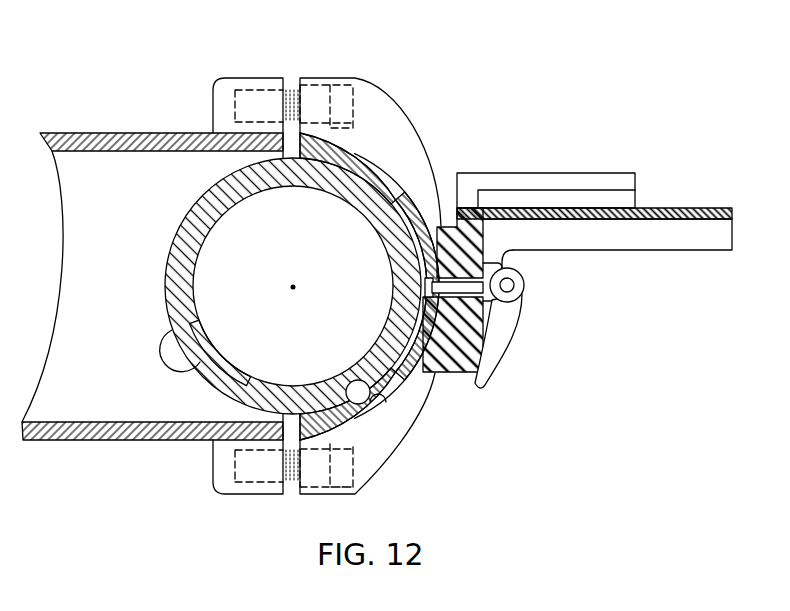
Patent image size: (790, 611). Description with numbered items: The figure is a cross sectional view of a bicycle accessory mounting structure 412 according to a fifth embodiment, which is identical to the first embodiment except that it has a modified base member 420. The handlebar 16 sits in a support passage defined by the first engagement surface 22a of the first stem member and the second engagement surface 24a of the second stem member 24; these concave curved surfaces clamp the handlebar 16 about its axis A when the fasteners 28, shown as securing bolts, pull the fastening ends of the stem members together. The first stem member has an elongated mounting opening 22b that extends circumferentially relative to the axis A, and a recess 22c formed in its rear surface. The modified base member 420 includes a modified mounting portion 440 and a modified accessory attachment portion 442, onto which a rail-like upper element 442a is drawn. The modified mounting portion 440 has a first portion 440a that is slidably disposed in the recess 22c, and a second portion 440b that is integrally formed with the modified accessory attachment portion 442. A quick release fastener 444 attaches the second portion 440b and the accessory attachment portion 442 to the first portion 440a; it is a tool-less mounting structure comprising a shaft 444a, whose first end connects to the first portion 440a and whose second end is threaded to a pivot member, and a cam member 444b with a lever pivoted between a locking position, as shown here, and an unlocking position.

The handlebar 16 is at (179, 210).
The second stem member 24 is at (108, 124).
The second engagement surface 24a is at (193, 352).
The fasteners 28 is at (354, 102).
The first engagement surface 22a is at (338, 412).
The mounting opening 22b is at (405, 188).
The recess 22c is at (372, 394).
The bicycle accessory mounting structure 412 is at (535, 85).
The modified base member 420 is at (681, 189).
The modified mounting portion 440 is at (517, 279).
The first portion 440a is at (441, 224).
The second portion 440b is at (484, 343).
The modified accessory attachment portion 442 is at (673, 258).
The plate rail 442a is at (587, 172).
The quick release fastener 444 is at (545, 328).
The shaft 444a is at (494, 258).
The cam member 444b is at (518, 332).
The axis A is at (293, 292).